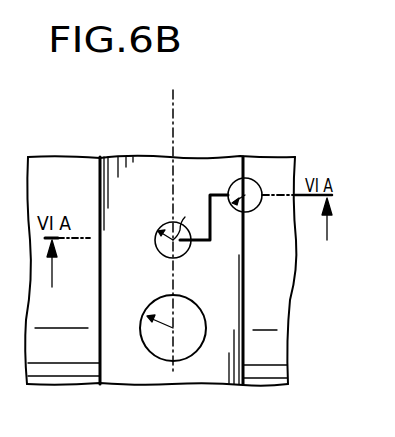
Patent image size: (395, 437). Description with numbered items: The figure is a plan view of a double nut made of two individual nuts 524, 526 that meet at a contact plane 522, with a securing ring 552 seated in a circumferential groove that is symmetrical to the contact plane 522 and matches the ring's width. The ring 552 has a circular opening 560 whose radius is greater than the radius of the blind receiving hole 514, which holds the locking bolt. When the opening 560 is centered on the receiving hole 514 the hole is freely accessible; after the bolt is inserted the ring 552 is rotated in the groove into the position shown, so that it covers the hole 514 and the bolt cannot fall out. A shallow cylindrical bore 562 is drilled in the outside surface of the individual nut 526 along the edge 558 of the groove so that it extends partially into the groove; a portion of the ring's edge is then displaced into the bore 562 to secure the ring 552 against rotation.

The blind receiving hole 514 is at (158, 253).
The contact plane 522 is at (178, 118).
The individual nut 524 is at (70, 178).
The individual nut 526 is at (292, 284).
The securing ring 552 is at (145, 178).
The edge of the groove 558 is at (244, 272).
The circular opening 560 is at (147, 340).
The shallow cylindrical bore 562 is at (263, 181).